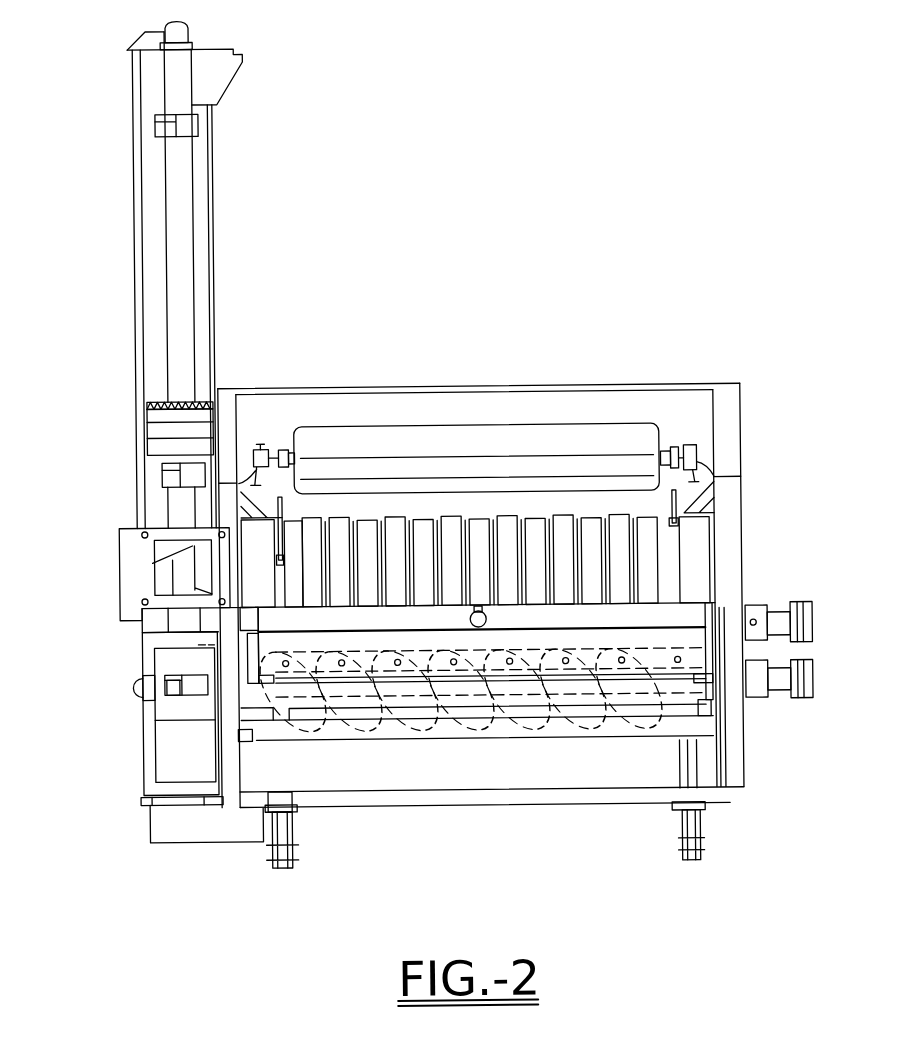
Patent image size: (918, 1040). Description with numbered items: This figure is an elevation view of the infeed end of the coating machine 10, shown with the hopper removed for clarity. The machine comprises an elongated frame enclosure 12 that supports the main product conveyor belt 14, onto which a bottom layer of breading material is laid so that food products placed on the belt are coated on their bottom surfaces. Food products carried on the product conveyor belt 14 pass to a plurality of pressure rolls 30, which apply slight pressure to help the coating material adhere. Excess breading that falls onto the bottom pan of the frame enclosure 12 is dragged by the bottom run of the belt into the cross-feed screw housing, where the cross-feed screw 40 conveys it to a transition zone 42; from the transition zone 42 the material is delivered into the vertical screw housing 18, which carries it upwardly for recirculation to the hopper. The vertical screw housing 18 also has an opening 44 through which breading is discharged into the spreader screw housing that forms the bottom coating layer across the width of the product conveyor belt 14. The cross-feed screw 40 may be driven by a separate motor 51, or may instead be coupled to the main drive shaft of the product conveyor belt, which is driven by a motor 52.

The coating machine 10 is at (481, 540).
The frame enclosure 12 is at (511, 385).
The main product conveyor belt 14 is at (670, 572).
The vertical screw housing 18 is at (138, 259).
The pressure rolls 30 is at (552, 425).
The cross-feed screw 40 is at (494, 733).
The transition zone 42 is at (151, 749).
The opening 44 is at (152, 572).
The motor 51 is at (813, 690).
The motor 52 is at (812, 608).